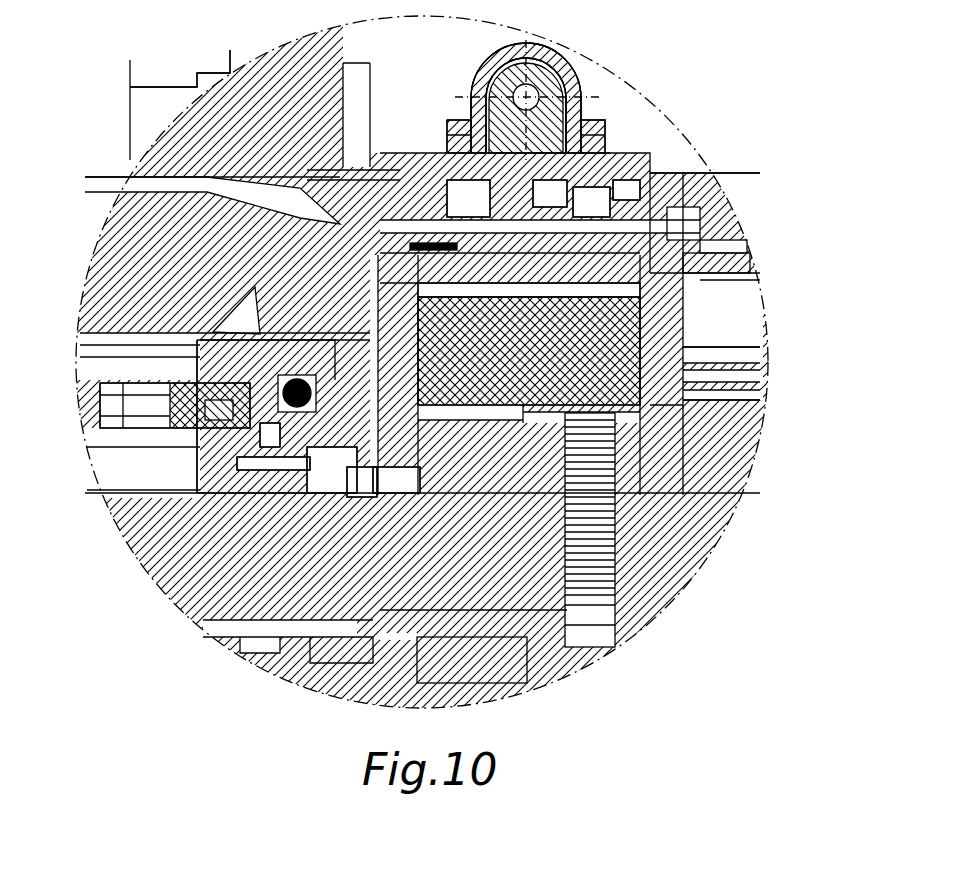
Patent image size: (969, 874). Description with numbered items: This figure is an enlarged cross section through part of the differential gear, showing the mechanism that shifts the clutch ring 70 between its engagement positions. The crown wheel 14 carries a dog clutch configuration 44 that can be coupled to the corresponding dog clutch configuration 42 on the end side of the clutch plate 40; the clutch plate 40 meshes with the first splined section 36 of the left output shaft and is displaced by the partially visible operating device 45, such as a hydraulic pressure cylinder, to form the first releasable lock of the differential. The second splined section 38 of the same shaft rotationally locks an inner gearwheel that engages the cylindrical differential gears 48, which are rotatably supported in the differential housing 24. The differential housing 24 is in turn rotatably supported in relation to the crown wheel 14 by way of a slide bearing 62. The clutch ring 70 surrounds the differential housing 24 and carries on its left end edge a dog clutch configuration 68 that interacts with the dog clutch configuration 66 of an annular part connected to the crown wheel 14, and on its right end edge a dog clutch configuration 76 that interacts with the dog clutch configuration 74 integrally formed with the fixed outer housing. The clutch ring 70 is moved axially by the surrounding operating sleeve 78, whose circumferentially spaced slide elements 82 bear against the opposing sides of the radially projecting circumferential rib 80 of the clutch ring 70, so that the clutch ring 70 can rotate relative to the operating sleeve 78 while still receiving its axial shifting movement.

The crown wheel 14 is at (287, 267).
The differential housing 24 is at (667, 267).
The first splined section 36 is at (337, 443).
The second splined section 38 is at (443, 485).
The clutch plate 40 is at (223, 441).
The dog clutch configuration 42 is at (270, 443).
The dog clutch configuration 44 is at (297, 480).
The operating device 45 is at (105, 400).
The cylindrical differential gears 48 is at (613, 333).
The slide bearing 62 is at (345, 452).
The dog clutch configuration 66 is at (393, 233).
The dog clutch configuration 68 is at (350, 160).
The clutch ring 70 is at (420, 233).
The dog clutch configuration 74 is at (650, 240).
The dog clutch configuration 76 is at (753, 283).
The operating sleeve 78 is at (560, 187).
The circumferential rib 80 is at (615, 205).
The slide elements 82 is at (452, 217).